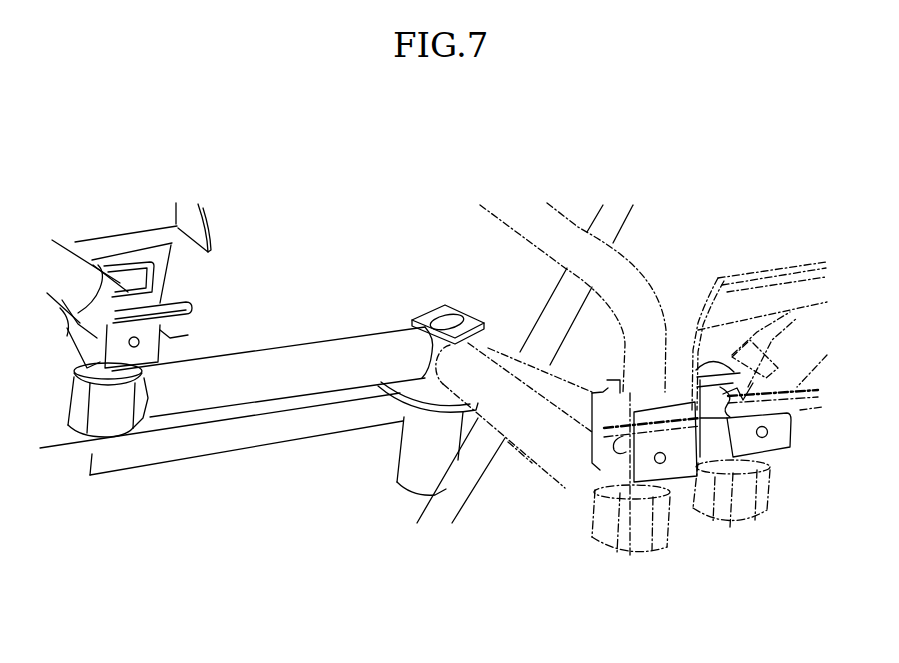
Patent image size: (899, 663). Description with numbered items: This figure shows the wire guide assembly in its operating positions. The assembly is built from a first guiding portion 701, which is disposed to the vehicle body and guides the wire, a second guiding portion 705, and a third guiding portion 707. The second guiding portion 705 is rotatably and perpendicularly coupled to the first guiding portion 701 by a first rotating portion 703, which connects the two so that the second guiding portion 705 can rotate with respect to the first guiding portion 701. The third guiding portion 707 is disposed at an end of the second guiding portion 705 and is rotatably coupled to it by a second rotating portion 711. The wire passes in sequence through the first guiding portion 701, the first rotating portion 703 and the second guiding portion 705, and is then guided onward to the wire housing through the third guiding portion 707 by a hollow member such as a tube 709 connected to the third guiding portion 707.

The first guiding portion 701 is at (403, 463).
The first rotating portion 703 is at (427, 310).
The second guiding portion 705 is at (337, 353).
The third guiding portion 707 is at (118, 484).
The tube 709 is at (60, 268).
The second rotating portion 711 is at (82, 408).